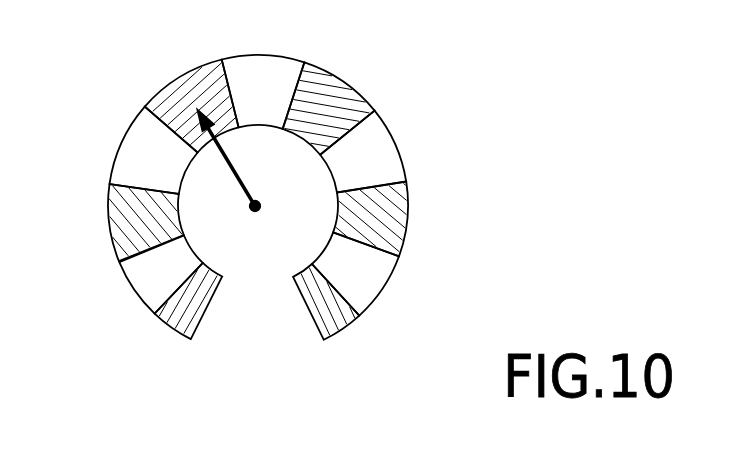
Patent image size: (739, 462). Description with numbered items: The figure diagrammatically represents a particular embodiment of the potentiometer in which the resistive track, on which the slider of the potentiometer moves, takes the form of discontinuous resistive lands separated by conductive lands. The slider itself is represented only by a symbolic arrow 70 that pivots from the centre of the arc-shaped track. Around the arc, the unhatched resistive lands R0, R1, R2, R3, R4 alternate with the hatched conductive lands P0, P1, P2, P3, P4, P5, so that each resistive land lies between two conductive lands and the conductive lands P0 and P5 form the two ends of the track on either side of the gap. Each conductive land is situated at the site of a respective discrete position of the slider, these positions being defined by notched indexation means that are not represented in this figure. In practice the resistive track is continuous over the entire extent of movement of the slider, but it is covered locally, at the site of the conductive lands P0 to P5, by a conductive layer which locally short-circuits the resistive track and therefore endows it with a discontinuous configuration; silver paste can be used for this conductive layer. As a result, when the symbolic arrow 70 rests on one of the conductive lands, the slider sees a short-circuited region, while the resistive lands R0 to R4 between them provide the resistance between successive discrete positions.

The symbolic arrow 70 is at (230, 158).
The conductive land P0 is at (176, 330).
The conductive land P1 is at (132, 223).
The conductive land P2 is at (194, 90).
The conductive land P3 is at (336, 98).
The conductive land P4 is at (388, 220).
The conductive land P5 is at (340, 326).
The resistive land R0 is at (147, 280).
The resistive land R1 is at (140, 148).
The resistive land R2 is at (272, 62).
The resistive land R3 is at (378, 146).
The resistive land R4 is at (372, 279).